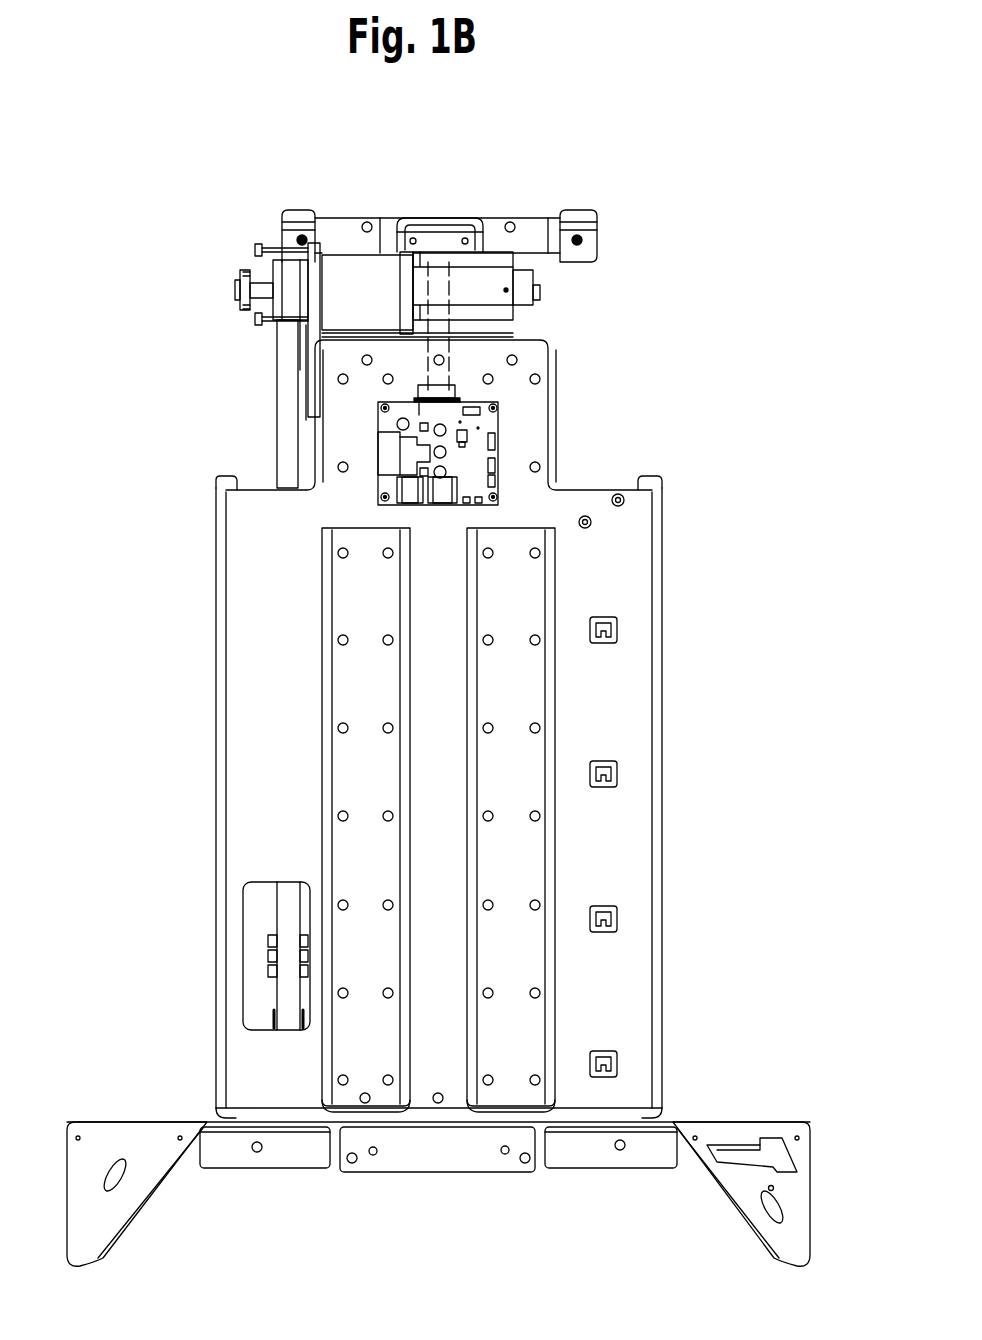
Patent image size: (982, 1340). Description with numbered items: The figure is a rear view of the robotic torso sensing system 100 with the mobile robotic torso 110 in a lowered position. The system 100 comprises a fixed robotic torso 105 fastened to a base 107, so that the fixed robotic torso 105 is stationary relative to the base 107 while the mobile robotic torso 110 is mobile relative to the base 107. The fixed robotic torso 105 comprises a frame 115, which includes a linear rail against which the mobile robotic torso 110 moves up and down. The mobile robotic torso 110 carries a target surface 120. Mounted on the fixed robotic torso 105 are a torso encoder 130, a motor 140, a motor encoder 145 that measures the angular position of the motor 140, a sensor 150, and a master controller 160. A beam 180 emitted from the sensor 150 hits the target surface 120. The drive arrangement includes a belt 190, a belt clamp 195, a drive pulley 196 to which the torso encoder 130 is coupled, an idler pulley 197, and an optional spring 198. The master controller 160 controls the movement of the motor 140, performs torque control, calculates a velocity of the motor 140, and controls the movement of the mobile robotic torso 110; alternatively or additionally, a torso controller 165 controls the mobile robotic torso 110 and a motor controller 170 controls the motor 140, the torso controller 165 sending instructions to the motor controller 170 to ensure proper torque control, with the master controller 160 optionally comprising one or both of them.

The robotic torso sensing system 100 is at (128, 747).
The fixed robotic torso 105 is at (793, 1095).
The base 107 is at (747, 1200).
The mobile robotic torso 110 is at (775, 213).
The frame 115 is at (626, 577).
The target surface 120 is at (433, 220).
The torso encoder 130 is at (237, 289).
The motor 140 is at (340, 260).
The motor encoder 145 is at (542, 295).
The sensor 150 is at (457, 392).
The master controller 160 is at (460, 467).
The torso controller 165 is at (448, 451).
The motor controller 170 is at (395, 425).
The beam 180 is at (450, 303).
The belt 190 is at (283, 444).
The belt clamp 195 is at (253, 319).
The drive pulley 196 is at (273, 263).
The idler pulley 197 is at (262, 1018).
The spring 198 is at (305, 398).